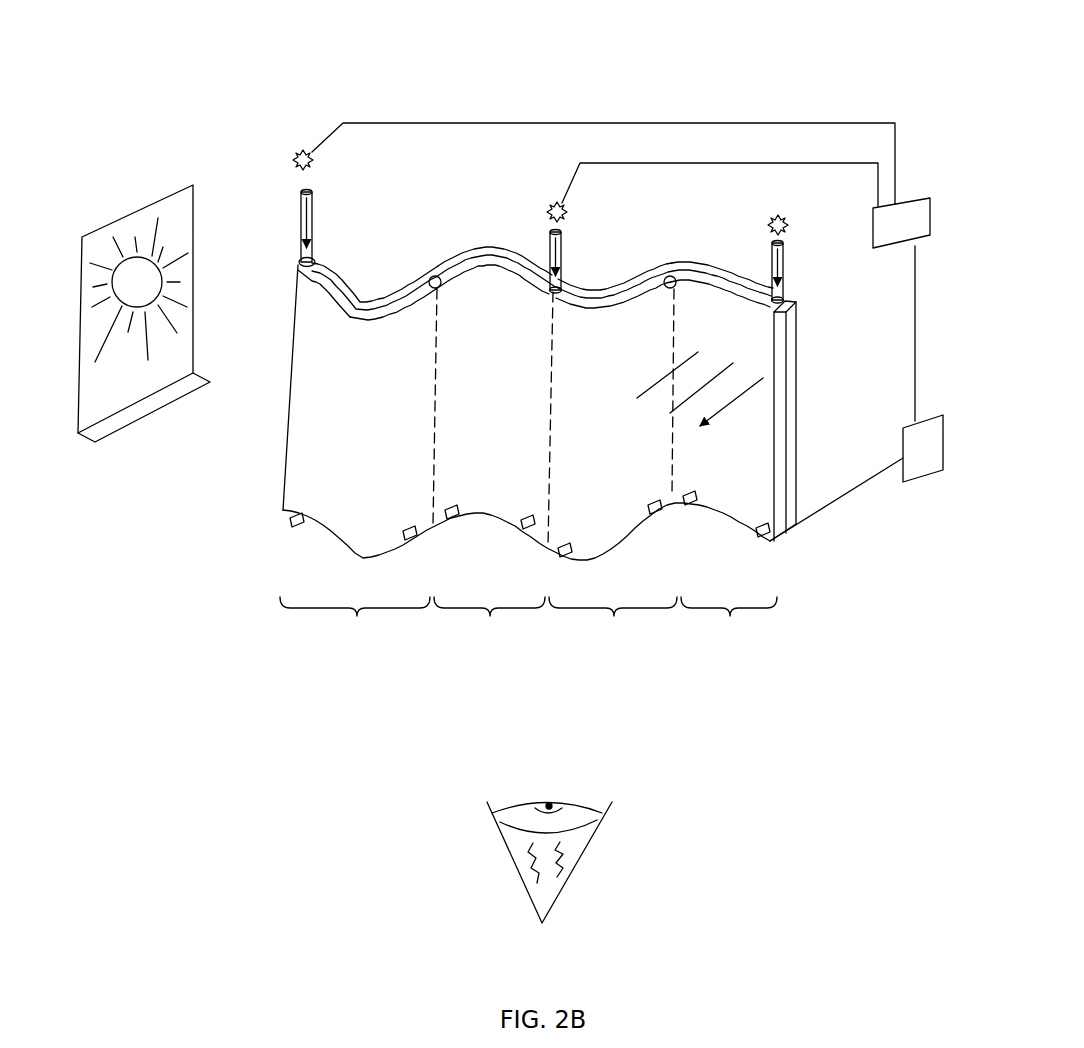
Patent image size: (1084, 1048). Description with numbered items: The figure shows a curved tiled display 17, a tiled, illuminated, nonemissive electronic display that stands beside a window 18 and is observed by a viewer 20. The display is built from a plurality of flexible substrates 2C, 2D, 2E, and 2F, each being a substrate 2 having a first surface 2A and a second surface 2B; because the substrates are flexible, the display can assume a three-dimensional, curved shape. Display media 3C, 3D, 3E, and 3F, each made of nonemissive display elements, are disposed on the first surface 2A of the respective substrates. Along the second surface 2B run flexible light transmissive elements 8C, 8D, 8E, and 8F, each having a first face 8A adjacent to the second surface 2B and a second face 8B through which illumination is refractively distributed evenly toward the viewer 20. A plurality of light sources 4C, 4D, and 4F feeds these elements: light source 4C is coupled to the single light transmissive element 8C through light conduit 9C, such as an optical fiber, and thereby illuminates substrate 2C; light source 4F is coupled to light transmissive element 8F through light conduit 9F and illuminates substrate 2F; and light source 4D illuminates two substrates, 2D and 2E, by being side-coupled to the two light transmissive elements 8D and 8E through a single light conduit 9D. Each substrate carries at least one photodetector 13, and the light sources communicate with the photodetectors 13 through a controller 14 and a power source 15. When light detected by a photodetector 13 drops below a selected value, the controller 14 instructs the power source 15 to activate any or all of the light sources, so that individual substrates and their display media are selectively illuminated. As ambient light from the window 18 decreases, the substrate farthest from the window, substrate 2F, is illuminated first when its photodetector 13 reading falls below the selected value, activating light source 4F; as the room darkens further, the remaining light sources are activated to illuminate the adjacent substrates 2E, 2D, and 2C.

The tiled display 17 is at (646, 44).
The window 18 is at (150, 205).
The light source 4C is at (334, 132).
The light source 4D is at (583, 180).
The light source 4F is at (790, 220).
The light conduit 9C is at (300, 226).
The light conduit 9D is at (565, 248).
The light conduit 9F is at (784, 284).
The display media 3C is at (331, 284).
The display media 3D is at (480, 246).
The display media 3E is at (617, 286).
The display media 3F is at (710, 259).
The first face of the light transmissive element 8A is at (375, 305).
The second face of the light transmissive element 8B is at (375, 323).
The light transmissive element 8C is at (322, 309).
The light transmissive element 8D is at (495, 276).
The light transmissive element 8E is at (601, 311).
The light transmissive element 8F is at (729, 284).
The substrate 2 is at (790, 462).
The first surface 2A is at (790, 468).
The second surface 2B is at (772, 475).
The power source 15 is at (923, 196).
The controller 14 is at (921, 490).
The photodetector 13 is at (760, 538).
The substrate 2C is at (355, 624).
The substrate 2D is at (489, 624).
The substrate 2E is at (613, 624).
The substrate 2F is at (729, 624).
The viewer 20 is at (604, 889).